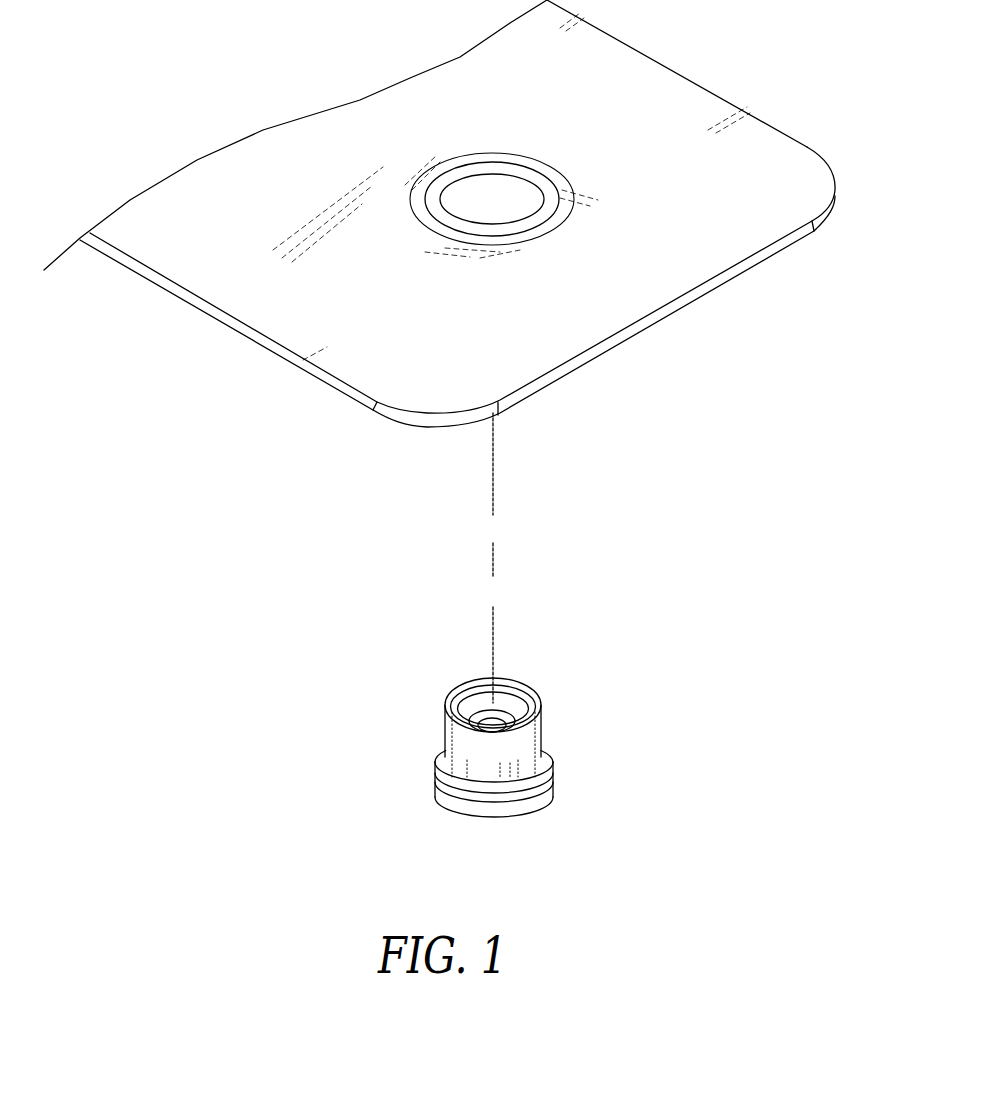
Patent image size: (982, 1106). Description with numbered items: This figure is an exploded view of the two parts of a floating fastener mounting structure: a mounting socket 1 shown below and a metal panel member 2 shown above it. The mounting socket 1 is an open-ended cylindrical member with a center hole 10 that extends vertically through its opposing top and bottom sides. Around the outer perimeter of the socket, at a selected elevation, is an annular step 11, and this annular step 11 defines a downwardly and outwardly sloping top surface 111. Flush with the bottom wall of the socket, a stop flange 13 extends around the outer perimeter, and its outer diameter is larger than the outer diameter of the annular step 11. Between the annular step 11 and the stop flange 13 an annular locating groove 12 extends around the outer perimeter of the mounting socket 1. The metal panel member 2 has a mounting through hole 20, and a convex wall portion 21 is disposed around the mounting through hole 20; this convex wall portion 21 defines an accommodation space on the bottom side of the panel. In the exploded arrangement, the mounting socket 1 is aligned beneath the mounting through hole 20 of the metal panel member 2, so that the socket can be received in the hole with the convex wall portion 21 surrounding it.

The mounting socket 1 is at (457, 740).
The center hole 10 is at (480, 691).
The annular step 11 is at (542, 778).
The sloping top surface 111 is at (543, 755).
The annular locating groove 12 is at (504, 812).
The stop flange 13 is at (447, 800).
The metal panel member 2 is at (755, 142).
The mounting through hole 20 is at (485, 197).
The convex wall portion 21 is at (560, 180).